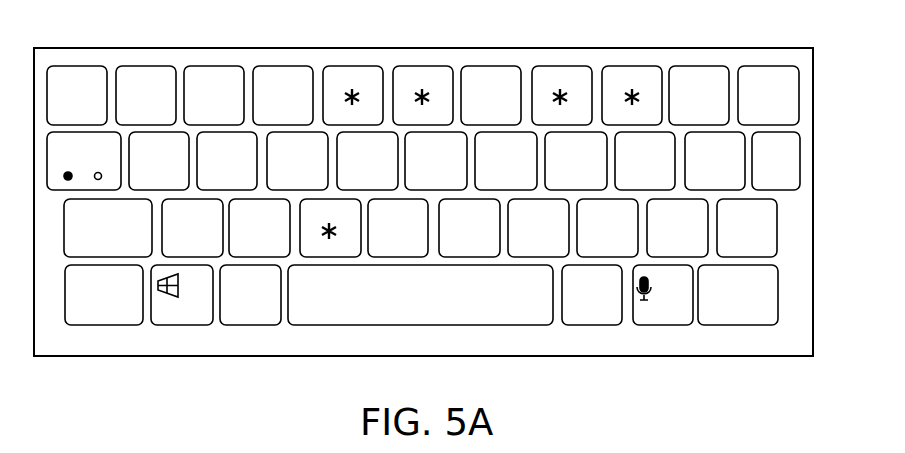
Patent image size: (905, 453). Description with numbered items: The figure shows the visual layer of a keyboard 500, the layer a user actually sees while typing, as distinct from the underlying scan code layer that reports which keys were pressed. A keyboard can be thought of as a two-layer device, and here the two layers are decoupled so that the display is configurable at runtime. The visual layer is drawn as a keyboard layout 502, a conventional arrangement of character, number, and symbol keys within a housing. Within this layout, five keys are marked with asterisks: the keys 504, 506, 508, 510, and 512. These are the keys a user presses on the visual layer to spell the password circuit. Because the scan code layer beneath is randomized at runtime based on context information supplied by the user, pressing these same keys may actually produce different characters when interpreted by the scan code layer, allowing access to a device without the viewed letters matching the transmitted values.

The keyboard 500 is at (733, 48).
The keyboard layout 502 is at (125, 340).
The key 504 is at (328, 250).
The key 506 is at (630, 77).
The key 508 is at (351, 82).
The key 510 is at (562, 77).
The key 512 is at (422, 82).